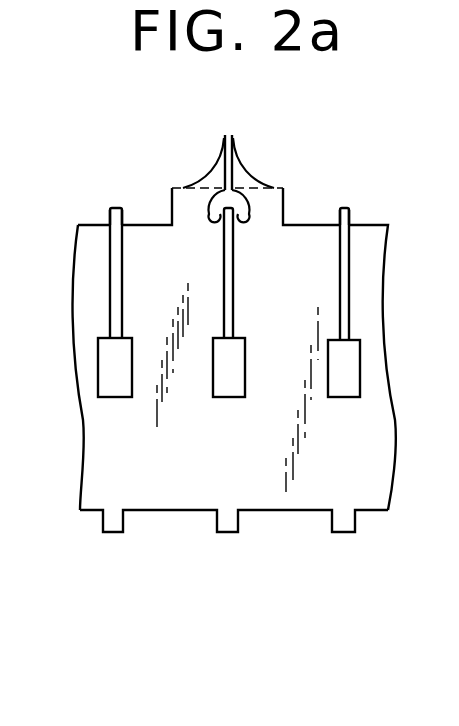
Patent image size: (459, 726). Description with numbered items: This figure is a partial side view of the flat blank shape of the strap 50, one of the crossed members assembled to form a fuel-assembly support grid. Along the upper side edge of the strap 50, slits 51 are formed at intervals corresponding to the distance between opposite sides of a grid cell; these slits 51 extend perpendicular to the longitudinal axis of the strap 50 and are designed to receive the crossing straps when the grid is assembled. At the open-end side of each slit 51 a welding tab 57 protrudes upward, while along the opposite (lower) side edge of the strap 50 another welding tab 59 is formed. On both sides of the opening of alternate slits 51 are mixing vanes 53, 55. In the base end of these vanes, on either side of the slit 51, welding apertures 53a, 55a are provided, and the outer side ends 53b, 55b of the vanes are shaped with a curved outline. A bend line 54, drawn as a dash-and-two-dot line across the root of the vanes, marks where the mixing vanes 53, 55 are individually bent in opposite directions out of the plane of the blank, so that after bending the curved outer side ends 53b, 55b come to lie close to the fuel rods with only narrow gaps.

The strap 50 is at (78, 433).
The slits 51 is at (110, 304).
The mixing vane 53 is at (244, 163).
The welding aperture 53a is at (242, 227).
The outer side end 53b is at (253, 167).
The bend line 54 is at (262, 184).
The mixing vane 55 is at (218, 168).
The welding aperture 55a is at (216, 228).
The outer side end 55b is at (200, 171).
The welding tab 57 is at (109, 213).
The welding tab 59 is at (101, 523).